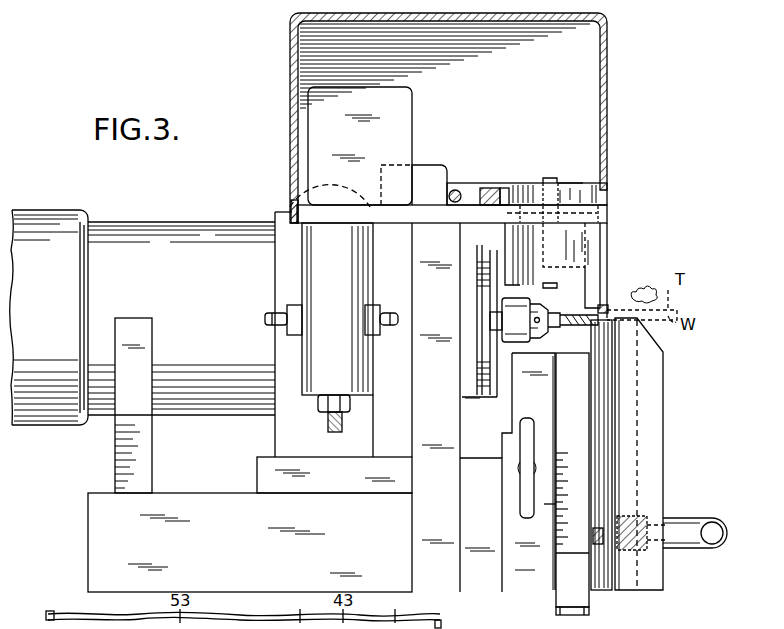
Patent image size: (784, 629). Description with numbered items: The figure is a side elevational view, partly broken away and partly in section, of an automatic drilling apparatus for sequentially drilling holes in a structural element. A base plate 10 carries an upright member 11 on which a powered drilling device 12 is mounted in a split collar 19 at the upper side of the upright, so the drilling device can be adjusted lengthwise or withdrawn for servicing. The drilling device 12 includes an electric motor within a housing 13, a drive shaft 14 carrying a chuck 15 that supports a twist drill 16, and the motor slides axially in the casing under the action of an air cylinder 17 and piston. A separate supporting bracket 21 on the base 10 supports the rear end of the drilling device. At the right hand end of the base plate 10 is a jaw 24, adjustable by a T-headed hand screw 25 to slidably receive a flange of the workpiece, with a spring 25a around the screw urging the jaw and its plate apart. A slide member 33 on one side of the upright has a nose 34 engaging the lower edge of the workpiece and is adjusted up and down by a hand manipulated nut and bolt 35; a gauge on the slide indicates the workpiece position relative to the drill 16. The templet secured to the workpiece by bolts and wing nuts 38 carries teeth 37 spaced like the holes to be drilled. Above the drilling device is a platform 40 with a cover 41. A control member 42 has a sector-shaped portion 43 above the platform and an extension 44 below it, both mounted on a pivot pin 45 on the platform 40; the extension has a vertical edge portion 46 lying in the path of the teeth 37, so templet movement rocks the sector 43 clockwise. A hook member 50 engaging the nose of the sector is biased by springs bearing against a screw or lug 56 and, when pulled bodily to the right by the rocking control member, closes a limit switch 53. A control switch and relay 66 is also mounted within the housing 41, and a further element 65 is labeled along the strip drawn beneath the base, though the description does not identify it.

The base plate 10 is at (95, 546).
The upright member 11 is at (290, 426).
The powered drilling device 12 is at (180, 248).
The housing 13 is at (316, 327).
The drive shaft 14 is at (498, 310).
The chuck 15 is at (505, 318).
The twist drill 16 is at (583, 325).
The air cylinder 17 is at (44, 215).
The split collar 19 is at (283, 212).
The supporting bracket 21 is at (115, 461).
The jaw 24 is at (660, 432).
The T-headed hand screw 25 is at (691, 542).
The spring 25a is at (652, 520).
The slide member 33 is at (580, 595).
The nose 34 is at (608, 352).
The hand manipulated nut and bolt 35 is at (524, 497).
The teeth 37 is at (605, 313).
The bolts and wing nuts 38 is at (653, 293).
The platform 40 is at (443, 212).
The cover 41 is at (607, 95).
The control member 42 is at (569, 180).
The sector-shaped portion 43 is at (525, 183).
The extension 44 is at (593, 253).
The pivot pin 45 is at (540, 215).
The vertical edge portion 46 is at (603, 270).
The hook member 50 is at (490, 188).
The limit switch 53 is at (430, 173).
The screw or lug 56 is at (300, 607).
The scale mark 65 is at (395, 607).
The control switch and relay 66 is at (407, 112).